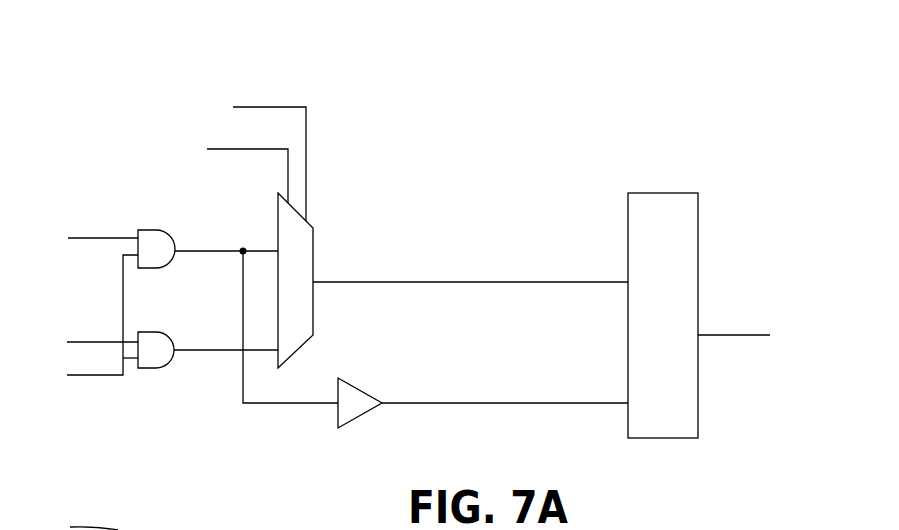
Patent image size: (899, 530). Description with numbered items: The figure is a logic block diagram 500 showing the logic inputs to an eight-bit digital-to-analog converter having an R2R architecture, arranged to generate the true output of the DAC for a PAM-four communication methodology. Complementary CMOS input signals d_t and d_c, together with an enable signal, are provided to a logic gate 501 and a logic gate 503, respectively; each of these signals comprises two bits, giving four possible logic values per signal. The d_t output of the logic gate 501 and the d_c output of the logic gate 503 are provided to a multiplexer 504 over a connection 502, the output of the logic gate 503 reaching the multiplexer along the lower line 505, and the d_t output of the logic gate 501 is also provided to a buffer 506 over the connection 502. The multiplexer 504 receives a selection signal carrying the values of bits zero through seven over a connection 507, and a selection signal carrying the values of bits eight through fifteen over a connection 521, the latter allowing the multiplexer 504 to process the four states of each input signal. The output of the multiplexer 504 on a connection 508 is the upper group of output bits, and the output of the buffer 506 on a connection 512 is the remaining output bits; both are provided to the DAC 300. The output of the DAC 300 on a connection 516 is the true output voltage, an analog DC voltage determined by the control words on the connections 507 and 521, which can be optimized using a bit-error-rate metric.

The logic block diagram 500 is at (124, 30).
The logic gate 501 is at (140, 229).
The connection 502 is at (253, 248).
The logic gate 503 is at (152, 369).
The multiplexer 504 is at (313, 255).
The AND gate 503 output line 505 is at (248, 352).
The buffer 506 is at (353, 388).
The connection 507 is at (295, 107).
The connection 521 is at (220, 149).
The connection 508 is at (492, 283).
The connection 512 is at (508, 403).
The DAC 300 is at (660, 193).
The connection 516 is at (735, 335).